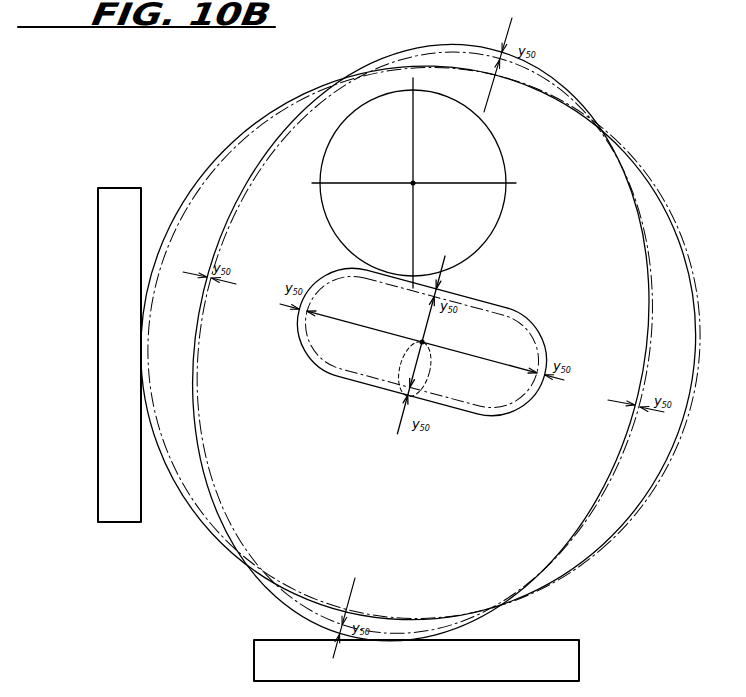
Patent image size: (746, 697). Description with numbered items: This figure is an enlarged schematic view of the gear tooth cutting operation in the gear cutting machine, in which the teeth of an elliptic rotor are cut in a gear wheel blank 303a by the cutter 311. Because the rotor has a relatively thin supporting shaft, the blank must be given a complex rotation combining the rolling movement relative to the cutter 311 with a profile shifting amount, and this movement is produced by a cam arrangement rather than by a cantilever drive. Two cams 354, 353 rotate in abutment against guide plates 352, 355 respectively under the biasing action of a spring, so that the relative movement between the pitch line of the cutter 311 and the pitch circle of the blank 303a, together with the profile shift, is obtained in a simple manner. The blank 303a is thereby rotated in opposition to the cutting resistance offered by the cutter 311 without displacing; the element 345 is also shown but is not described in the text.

The gear wheel blank 303a is at (503, 418).
The cutter 311 is at (506, 180).
The guide element 345 is at (606, 2).
The guide plate 352 is at (120, 188).
The cam 353 is at (213, 537).
The cam 354 is at (383, 58).
The guide plate 355 is at (550, 640).